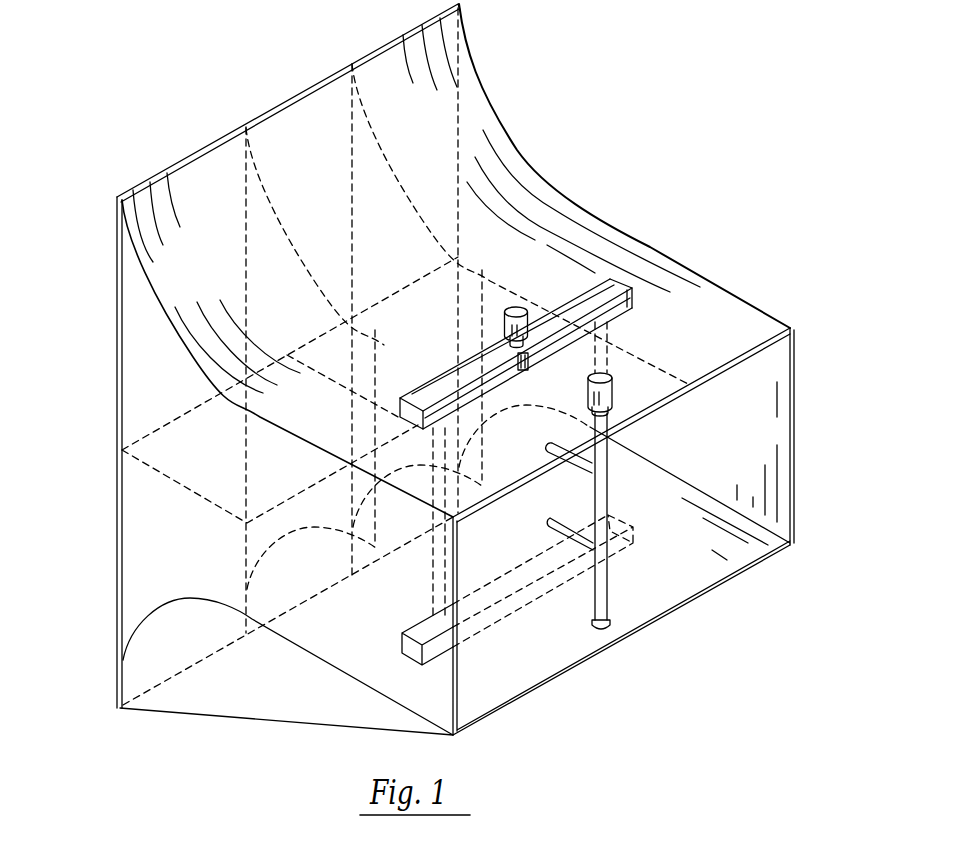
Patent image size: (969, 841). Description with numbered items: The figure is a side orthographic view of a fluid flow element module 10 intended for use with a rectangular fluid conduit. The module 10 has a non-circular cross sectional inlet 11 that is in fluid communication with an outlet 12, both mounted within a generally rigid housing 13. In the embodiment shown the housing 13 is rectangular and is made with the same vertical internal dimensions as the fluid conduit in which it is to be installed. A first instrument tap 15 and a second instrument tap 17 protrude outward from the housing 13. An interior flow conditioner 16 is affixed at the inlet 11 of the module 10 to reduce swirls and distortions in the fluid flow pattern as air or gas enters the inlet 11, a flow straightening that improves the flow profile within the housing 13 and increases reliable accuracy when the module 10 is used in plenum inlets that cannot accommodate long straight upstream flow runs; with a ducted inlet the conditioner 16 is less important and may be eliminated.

The fluid flow element module 10 is at (655, 113).
The inlet 11 is at (96, 285).
The outlet 12 is at (752, 460).
The housing 13 is at (755, 328).
The first instrument tap 15 is at (548, 328).
The interior flow conditioner 16 is at (180, 473).
The second instrument tap 17 is at (613, 387).